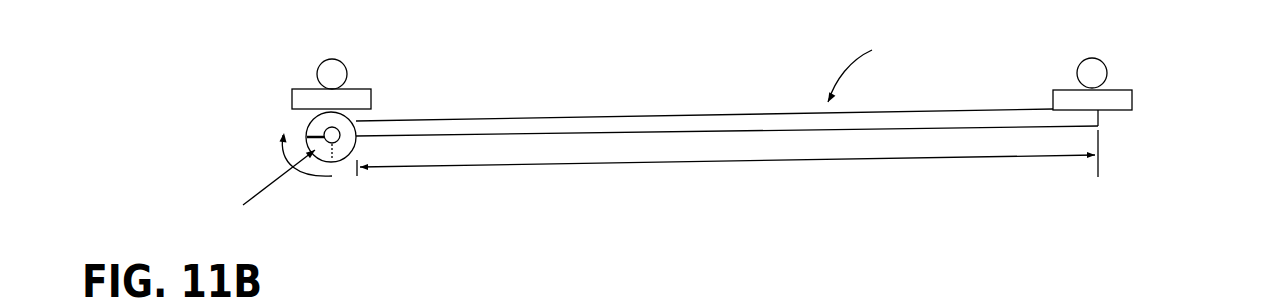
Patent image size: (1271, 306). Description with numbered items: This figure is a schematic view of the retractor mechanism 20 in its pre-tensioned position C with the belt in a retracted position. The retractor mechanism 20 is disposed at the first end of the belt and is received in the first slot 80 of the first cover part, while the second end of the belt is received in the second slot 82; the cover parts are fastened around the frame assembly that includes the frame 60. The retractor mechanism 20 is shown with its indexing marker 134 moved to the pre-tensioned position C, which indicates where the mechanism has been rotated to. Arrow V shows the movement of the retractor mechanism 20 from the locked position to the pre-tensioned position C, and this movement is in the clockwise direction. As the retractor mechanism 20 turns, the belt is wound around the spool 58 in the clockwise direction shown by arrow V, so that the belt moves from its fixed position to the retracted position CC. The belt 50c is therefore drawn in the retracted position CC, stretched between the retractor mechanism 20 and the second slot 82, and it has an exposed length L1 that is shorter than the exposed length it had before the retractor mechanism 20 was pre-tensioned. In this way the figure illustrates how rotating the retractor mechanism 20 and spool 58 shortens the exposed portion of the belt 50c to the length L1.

The frame 60 is at (322, 62).
The first slot 80 is at (303, 95).
The second slot 82 is at (1122, 100).
The retractor mechanism 20 is at (340, 162).
The spool 58 is at (323, 131).
The belt 50c is at (714, 117).
The indexing marker 134 is at (282, 157).
The pre-tensioned position C is at (268, 186).
The arrow V is at (316, 163).
The retracted position CC is at (866, 67).
The exposed length L1 is at (1003, 156).